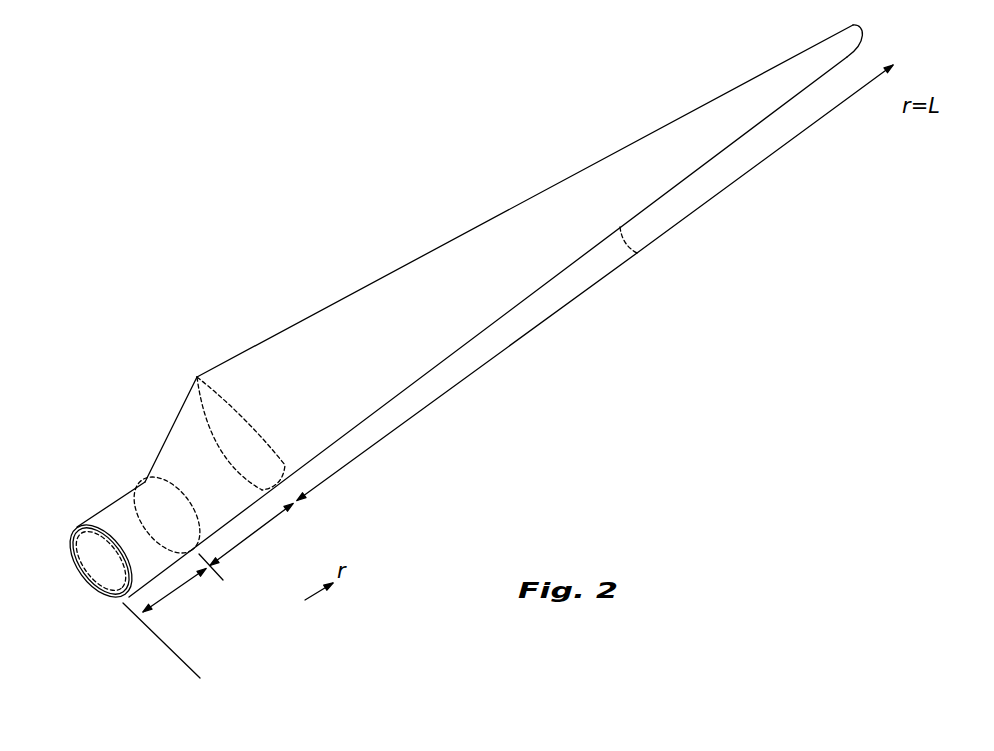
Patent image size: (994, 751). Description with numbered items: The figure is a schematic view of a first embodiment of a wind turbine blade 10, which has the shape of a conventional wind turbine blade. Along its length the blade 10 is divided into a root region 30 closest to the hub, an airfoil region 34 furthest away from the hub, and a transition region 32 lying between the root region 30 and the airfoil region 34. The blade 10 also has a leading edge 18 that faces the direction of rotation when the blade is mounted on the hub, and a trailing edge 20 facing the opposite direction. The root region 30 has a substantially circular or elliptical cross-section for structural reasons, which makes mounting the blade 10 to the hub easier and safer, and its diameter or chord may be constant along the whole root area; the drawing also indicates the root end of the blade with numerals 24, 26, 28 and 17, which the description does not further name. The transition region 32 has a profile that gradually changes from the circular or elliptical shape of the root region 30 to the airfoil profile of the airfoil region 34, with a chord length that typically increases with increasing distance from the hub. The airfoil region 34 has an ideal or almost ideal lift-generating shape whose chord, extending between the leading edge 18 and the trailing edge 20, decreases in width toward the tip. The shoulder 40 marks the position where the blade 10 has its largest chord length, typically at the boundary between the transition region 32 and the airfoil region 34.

The wind turbine blade 10 is at (326, 206).
The blade root interior 17 is at (88, 552).
The leading edge 18 is at (640, 257).
The trailing edge 20 is at (515, 197).
The root segment 24 is at (97, 520).
The root end face 26 is at (114, 597).
The root end rim 28 is at (87, 528).
The root region 30 is at (178, 597).
The transition region 32 is at (257, 533).
The airfoil region 34 is at (535, 328).
The shoulder 40 is at (197, 377).